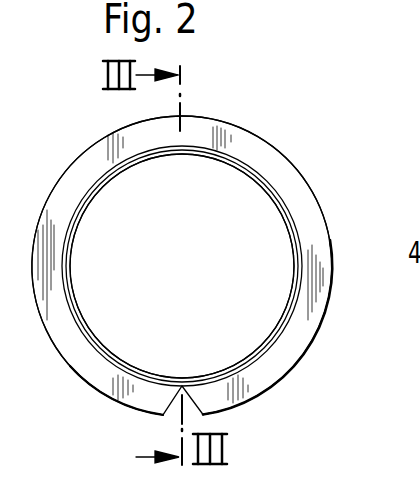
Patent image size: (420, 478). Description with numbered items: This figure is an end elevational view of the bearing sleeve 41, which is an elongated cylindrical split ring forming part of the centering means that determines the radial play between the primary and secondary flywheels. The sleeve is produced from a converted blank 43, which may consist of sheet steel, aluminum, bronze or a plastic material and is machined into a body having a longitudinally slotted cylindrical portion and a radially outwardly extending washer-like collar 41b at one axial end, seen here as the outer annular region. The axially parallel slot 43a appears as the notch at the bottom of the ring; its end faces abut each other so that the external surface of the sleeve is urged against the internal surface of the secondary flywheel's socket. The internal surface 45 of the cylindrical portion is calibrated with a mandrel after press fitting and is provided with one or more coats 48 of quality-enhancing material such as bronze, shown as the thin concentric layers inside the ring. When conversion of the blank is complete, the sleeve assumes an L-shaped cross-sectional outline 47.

The bearing sleeve 41 is at (212, 150).
The collar 41b is at (257, 152).
The converted blank 43 is at (299, 229).
The slot 43a is at (183, 384).
The internal surface 45 is at (277, 205).
The L-shaped cross-sectional outline 47 is at (291, 212).
The coats 48 is at (97, 190).